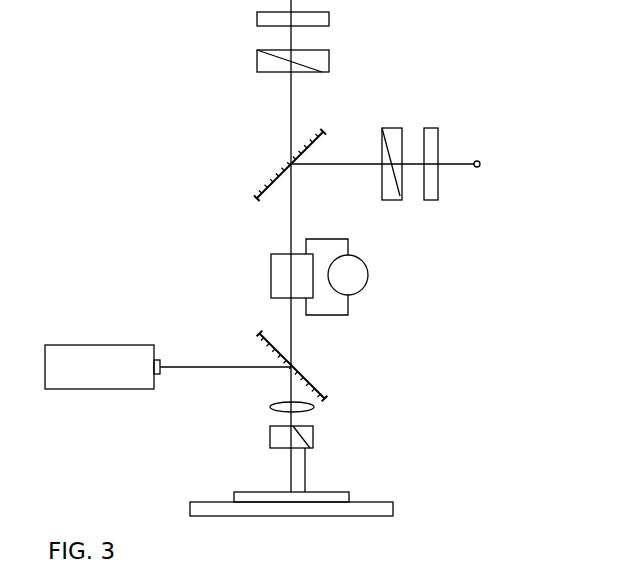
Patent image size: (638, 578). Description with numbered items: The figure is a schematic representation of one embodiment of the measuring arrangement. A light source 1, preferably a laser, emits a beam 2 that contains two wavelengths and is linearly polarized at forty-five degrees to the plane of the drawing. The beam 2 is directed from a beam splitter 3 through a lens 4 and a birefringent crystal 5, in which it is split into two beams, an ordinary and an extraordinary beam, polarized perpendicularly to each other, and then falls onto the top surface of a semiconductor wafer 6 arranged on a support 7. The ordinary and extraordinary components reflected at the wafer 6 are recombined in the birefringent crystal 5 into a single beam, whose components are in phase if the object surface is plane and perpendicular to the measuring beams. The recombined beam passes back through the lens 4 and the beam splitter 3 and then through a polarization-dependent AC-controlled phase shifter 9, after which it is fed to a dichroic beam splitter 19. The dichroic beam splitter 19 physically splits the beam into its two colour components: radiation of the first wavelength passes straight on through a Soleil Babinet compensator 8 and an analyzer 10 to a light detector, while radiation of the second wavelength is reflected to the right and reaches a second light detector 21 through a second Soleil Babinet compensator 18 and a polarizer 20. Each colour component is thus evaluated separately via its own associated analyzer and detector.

The light source 1 is at (147, 350).
The beam 2 is at (204, 367).
The beam splitter 3 is at (316, 383).
The lens 4 is at (314, 408).
The birefringent crystal 5 is at (313, 437).
The semiconductor wafer 6 is at (346, 494).
The support 7 is at (379, 505).
The Soleil Babinet compensator 8 is at (322, 60).
The polarization-dependent AC-controlled phase shifter 9 is at (276, 268).
The analyzer 10 is at (329, 17).
The second Soleil Babinet compensator 18 is at (392, 132).
The dichroic beam splitter 19 is at (274, 181).
The polarizer 20 is at (430, 132).
The second light detector 21 is at (477, 160).